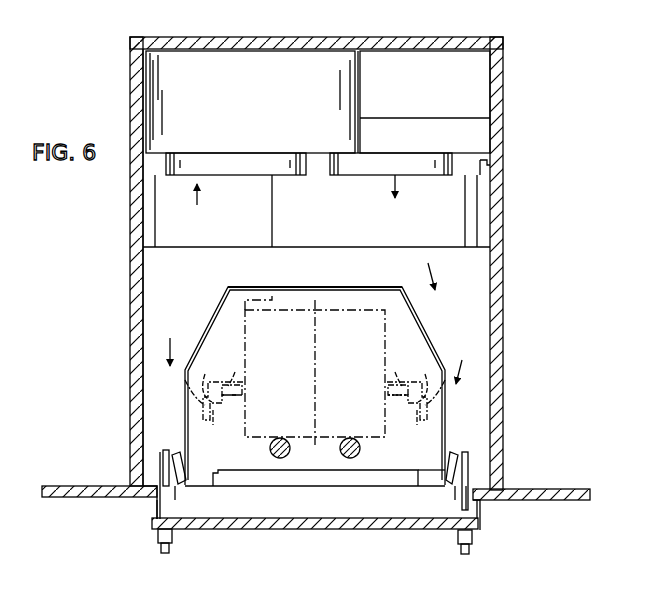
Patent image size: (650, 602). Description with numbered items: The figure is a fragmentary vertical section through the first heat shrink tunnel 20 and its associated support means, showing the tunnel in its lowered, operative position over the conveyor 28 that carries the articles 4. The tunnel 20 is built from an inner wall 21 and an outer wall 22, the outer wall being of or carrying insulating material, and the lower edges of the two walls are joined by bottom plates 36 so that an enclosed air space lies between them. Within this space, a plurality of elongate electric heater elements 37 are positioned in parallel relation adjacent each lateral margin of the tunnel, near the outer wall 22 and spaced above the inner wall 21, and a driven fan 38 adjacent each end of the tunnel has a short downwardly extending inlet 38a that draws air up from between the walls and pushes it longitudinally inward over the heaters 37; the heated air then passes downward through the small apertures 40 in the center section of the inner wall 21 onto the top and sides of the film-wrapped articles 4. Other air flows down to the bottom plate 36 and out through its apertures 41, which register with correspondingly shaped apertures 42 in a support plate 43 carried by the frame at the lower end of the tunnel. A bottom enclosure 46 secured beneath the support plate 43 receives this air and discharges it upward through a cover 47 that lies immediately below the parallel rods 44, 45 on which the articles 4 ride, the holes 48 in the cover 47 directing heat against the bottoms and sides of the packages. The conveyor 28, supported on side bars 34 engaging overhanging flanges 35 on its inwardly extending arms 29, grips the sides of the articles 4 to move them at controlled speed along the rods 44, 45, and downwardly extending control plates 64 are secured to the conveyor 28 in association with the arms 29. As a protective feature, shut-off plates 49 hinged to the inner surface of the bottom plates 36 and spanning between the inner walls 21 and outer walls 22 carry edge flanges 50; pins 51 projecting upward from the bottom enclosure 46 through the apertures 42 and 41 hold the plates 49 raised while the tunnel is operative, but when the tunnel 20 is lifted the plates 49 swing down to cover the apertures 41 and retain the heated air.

The article 4 is at (292, 300).
The first heat shrink tunnel 20 is at (506, 224).
The inner wall 21 is at (210, 328).
The outer wall 22 is at (130, 312).
The conveyor 28 is at (243, 405).
The arm 29 is at (316, 368).
The side bar 34 is at (315, 425).
The overhanging flange 35 is at (316, 378).
The bottom plate 36 is at (155, 470).
The heater element 37 is at (475, 138).
The fan 38 is at (290, 55).
The inlet 38a is at (200, 172).
The aperture 40 is at (244, 287).
The aperture 41 is at (156, 506).
The aperture 42 is at (240, 485).
The support plate 43 is at (82, 498).
The rod 44 is at (291, 451).
The rod 45 is at (361, 451).
The bottom enclosure 46 is at (262, 530).
The cover 47 is at (443, 470).
The hole 48 is at (241, 478).
The shut-off plate 49 is at (185, 466).
The edge flange 50 is at (170, 450).
The pin 51 is at (470, 476).
The control plate 64 is at (186, 392).